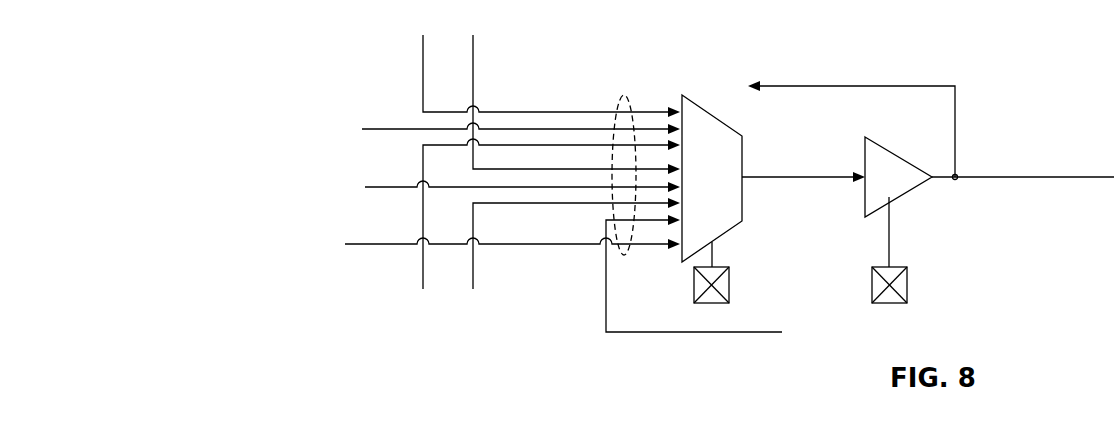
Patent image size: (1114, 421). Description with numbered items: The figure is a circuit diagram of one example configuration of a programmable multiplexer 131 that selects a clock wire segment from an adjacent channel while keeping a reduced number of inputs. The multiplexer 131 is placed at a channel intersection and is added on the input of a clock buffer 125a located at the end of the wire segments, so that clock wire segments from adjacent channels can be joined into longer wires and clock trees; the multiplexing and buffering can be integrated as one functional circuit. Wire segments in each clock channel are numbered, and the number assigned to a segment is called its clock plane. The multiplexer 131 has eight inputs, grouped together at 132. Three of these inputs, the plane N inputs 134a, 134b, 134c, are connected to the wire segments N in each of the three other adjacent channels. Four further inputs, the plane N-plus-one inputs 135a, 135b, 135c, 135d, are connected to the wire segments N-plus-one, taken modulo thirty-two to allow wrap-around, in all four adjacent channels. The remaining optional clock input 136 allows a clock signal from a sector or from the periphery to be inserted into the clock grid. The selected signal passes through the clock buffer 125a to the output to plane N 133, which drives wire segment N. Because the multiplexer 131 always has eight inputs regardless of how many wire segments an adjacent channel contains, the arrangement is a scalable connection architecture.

The clock buffer 125a is at (900, 197).
The multiplexer 131 is at (708, 113).
The multiplexer inputs 132 is at (623, 96).
The output to plane N 133 is at (1055, 147).
The plane N input 134a is at (324, 17).
The plane N input 134b is at (243, 122).
The plane N input 134c is at (367, 326).
The plane N+1 input 135a is at (606, 22).
The plane N+1 input 135b is at (219, 182).
The plane N+1 input 135c is at (509, 326).
The plane N+1 input 135d is at (718, 364).
The optional clock input 136 is at (150, 243).